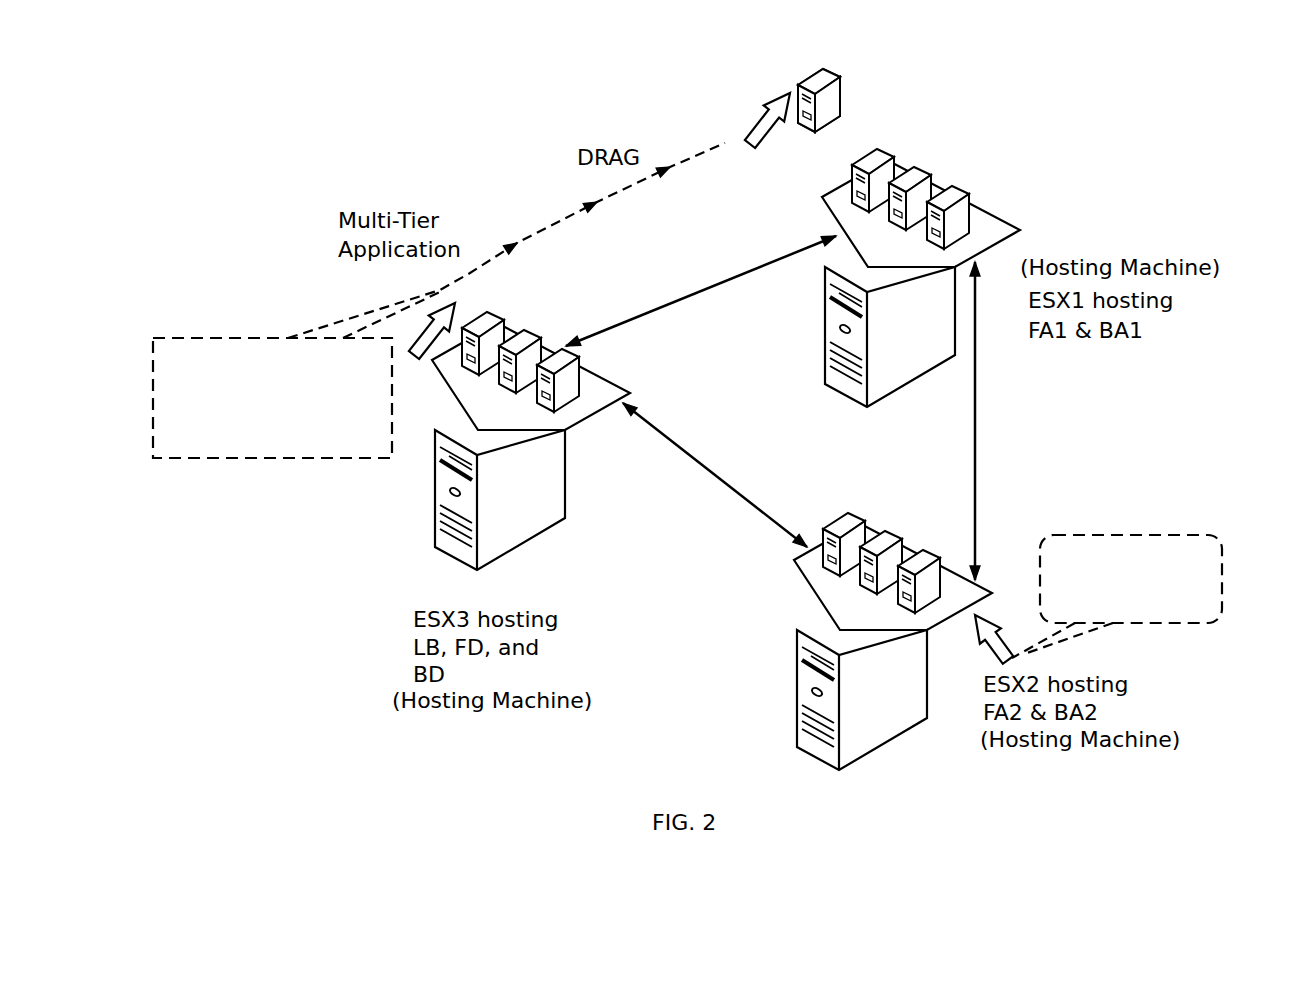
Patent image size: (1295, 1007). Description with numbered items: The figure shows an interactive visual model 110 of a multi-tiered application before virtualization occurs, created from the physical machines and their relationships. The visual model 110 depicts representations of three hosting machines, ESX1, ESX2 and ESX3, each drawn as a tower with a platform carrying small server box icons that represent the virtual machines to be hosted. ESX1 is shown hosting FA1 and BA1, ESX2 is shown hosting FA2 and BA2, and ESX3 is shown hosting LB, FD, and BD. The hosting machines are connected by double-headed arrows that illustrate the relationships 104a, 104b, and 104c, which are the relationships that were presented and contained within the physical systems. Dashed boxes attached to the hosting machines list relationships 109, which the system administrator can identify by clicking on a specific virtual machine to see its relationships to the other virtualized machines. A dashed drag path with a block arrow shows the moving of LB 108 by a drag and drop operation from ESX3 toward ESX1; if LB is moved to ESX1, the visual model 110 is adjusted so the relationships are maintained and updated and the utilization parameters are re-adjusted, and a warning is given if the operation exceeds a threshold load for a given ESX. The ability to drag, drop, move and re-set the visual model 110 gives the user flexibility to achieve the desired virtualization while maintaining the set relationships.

The LB 108 is at (808, 76).
The relationships 109 is at (227, 338).
The relationship 104a is at (641, 316).
The relationship 104b is at (692, 458).
The relationship 104c is at (975, 430).
The visual model 110 is at (1232, 477).
The element LB is at (492, 312).
The element FD is at (527, 330).
The element BD is at (579, 372).
The element FA1 is at (888, 152).
The element BA1 is at (925, 175).
The element FA2 is at (858, 512).
The element BA2 is at (934, 555).